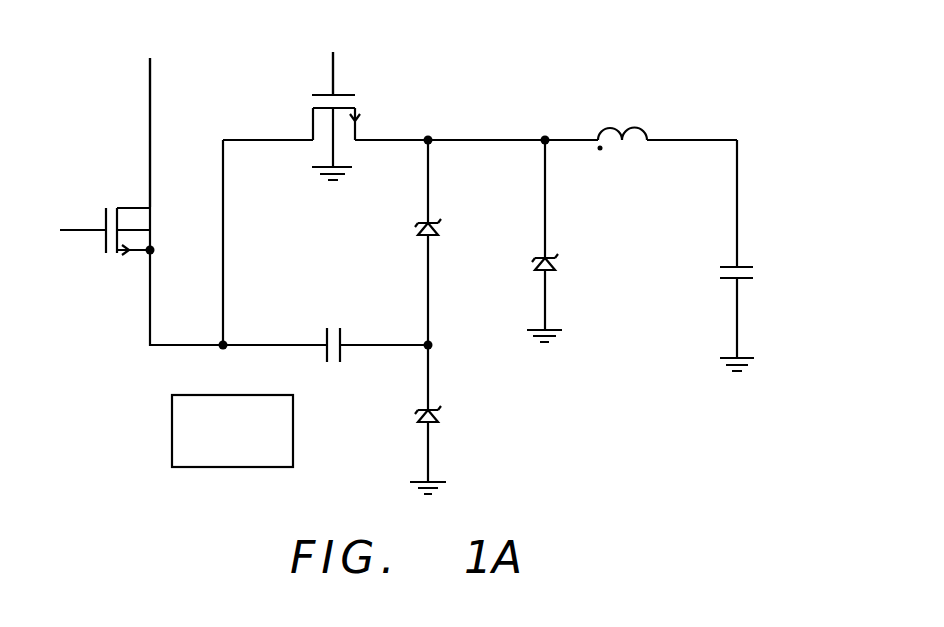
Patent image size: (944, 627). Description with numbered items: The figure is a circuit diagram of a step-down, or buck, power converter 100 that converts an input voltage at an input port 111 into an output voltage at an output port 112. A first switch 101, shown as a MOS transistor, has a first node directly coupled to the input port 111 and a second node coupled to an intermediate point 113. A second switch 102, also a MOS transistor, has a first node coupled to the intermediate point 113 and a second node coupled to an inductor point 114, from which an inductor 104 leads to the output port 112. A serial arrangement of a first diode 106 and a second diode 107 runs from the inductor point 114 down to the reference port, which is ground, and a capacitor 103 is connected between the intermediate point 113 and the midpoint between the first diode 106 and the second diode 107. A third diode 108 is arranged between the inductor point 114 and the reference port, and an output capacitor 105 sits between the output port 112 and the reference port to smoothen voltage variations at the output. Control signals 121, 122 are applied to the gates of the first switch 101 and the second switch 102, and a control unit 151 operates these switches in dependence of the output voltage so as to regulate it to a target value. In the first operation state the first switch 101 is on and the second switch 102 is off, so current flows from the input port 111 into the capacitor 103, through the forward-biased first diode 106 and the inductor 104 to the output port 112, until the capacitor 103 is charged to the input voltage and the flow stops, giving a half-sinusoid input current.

The power converter 100 is at (662, 58).
The first switch 101 is at (144, 218).
The second switch 102 is at (323, 146).
The capacitor 103 is at (325, 338).
The inductor 104 is at (621, 152).
The output capacitor 105 is at (744, 264).
The first diode 106 is at (439, 222).
The second diode 107 is at (439, 408).
The third diode 108 is at (552, 256).
The input port 111 is at (150, 68).
The output port 112 is at (726, 138).
The intermediate point 113 is at (220, 343).
The inductor point 114 is at (428, 138).
The control signal 121 is at (77, 231).
The control signal 122 is at (333, 66).
The control unit 151 is at (238, 467).